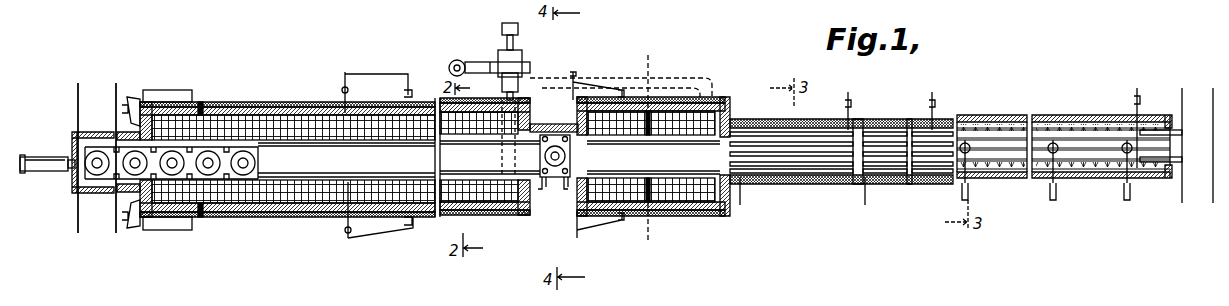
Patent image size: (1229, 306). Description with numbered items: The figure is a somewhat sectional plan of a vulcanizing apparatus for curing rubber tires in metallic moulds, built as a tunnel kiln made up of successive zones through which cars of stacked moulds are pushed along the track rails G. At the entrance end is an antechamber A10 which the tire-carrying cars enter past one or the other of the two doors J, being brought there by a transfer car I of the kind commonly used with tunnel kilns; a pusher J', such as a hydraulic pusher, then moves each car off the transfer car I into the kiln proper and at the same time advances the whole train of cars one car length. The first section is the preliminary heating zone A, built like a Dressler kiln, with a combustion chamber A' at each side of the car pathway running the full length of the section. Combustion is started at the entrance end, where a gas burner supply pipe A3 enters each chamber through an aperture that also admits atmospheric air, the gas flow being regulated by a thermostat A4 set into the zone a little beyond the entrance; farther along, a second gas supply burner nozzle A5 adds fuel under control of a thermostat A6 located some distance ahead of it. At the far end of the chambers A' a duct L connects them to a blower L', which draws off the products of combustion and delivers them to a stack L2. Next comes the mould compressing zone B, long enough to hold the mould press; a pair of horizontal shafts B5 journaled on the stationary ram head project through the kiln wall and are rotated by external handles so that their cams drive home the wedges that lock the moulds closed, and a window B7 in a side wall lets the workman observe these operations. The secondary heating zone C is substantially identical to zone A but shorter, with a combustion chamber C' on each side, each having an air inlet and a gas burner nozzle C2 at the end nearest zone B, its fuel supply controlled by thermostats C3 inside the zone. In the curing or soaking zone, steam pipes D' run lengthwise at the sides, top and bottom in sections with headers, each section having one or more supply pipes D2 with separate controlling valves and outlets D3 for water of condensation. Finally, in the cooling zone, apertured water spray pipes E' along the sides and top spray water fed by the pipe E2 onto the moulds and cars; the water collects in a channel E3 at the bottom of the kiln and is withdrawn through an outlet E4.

The preliminary heating zone A is at (346, 161).
The combustion chamber A' is at (287, 156).
The gas burner supply pipe A3 is at (132, 102).
The thermostat A4 is at (202, 102).
The second gas supply burner nozzle A5 is at (344, 74).
The thermostat A6 is at (406, 73).
The antechamber A10 is at (74, 136).
The mould compressing zone B is at (535, 124).
The horizontal shafts B5 is at (542, 190).
The window B7 is at (554, 180).
The secondary heating zone C is at (651, 125).
The combustion chamber C' is at (653, 144).
The gas burner nozzle C2 is at (576, 82).
The thermostat C3 is at (648, 146).
The steam pipes D' is at (841, 138).
The supply pipe D2 is at (850, 112).
The outlet D3 is at (740, 200).
The water spray pipes E' is at (1064, 129).
The pipe E2 is at (1139, 103).
The channel E3 is at (962, 146).
The outlet E4 is at (970, 190).
The track rails G is at (356, 144).
The transfer car I is at (99, 193).
The doors J is at (81, 166).
The pusher J' is at (45, 182).
The duct L is at (496, 124).
The blower L' is at (519, 50).
The stack L2 is at (458, 60).